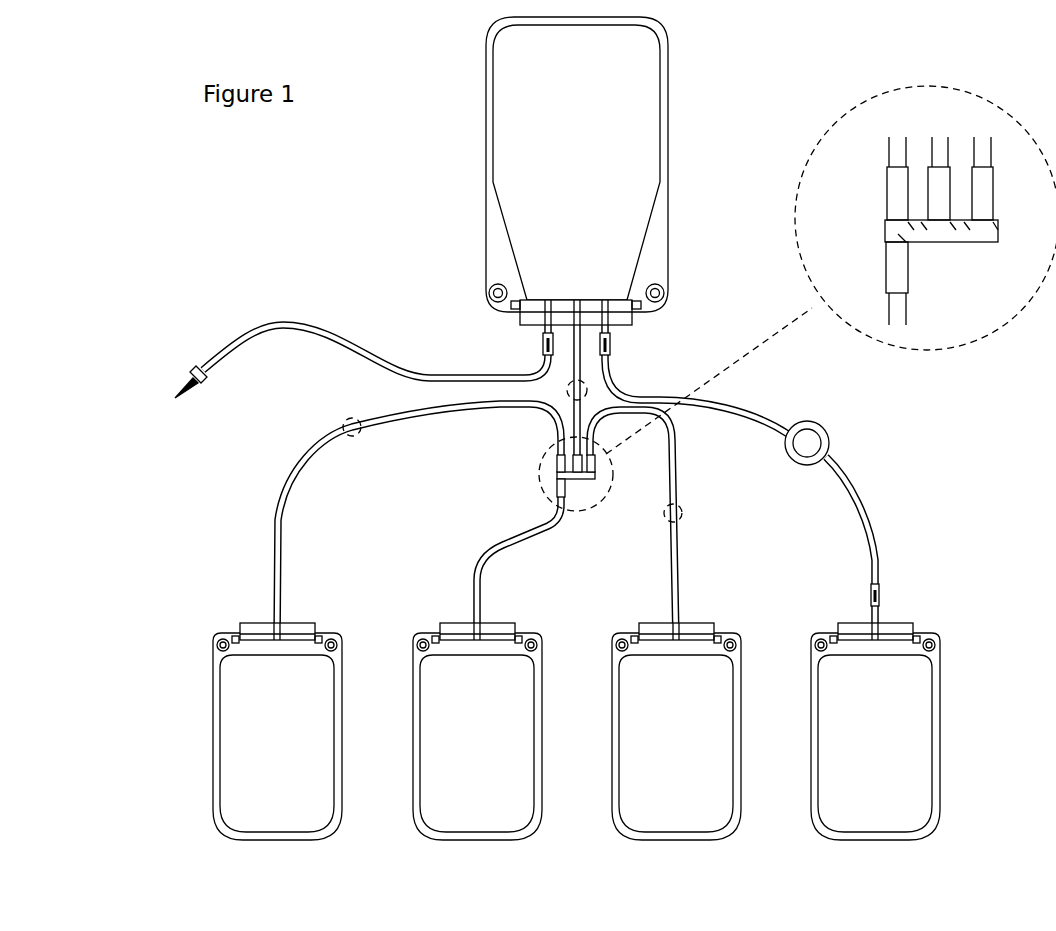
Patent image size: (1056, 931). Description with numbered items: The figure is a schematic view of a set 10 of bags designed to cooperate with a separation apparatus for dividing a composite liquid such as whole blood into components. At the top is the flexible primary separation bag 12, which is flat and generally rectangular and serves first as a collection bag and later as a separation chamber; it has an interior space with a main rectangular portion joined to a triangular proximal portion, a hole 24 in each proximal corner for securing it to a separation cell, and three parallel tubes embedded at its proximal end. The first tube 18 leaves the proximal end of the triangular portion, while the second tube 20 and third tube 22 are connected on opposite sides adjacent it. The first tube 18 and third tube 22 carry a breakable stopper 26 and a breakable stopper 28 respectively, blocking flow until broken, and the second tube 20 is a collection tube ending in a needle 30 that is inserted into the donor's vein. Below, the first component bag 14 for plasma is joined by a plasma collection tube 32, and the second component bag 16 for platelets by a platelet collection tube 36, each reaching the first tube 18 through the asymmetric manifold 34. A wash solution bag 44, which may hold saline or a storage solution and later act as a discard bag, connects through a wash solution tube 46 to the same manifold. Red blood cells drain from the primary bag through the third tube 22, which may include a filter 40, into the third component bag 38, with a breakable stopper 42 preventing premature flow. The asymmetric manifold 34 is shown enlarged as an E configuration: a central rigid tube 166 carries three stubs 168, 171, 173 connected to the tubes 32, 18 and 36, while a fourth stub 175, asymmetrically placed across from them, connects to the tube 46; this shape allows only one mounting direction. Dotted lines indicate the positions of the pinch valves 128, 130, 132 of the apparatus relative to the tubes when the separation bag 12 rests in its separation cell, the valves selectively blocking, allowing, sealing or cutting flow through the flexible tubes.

The set of bags 10 is at (352, 290).
The primary separation bag 12 is at (486, 92).
The first component bag 14 is at (257, 623).
The second component bag 16 is at (655, 620).
The first tube 18 is at (572, 373).
The second tube 20 is at (439, 376).
The third tube 22 is at (862, 527).
The hole 24 is at (490, 283).
The breakable stopper 26 is at (573, 343).
The breakable stopper 28 is at (609, 346).
The needle 30 is at (204, 378).
The plasma collection tube 32 is at (284, 508).
The asymmetric manifold 34 is at (583, 478).
The platelet collection tube 36 is at (671, 543).
The third component bag 38 is at (853, 620).
The filter 40 is at (823, 428).
The breakable stopper 42 is at (879, 598).
The wash solution bag 44 is at (453, 622).
The wash solution tube 46 is at (475, 568).
The pinch valve 128 is at (360, 437).
The pinch valve 130 is at (588, 385).
The pinch valve 132 is at (683, 512).
The central rigid tube 166 is at (998, 240).
The stub 168 is at (887, 196).
The stub 171 is at (928, 178).
The stub 173 is at (995, 196).
The fourth stub 175 is at (910, 272).